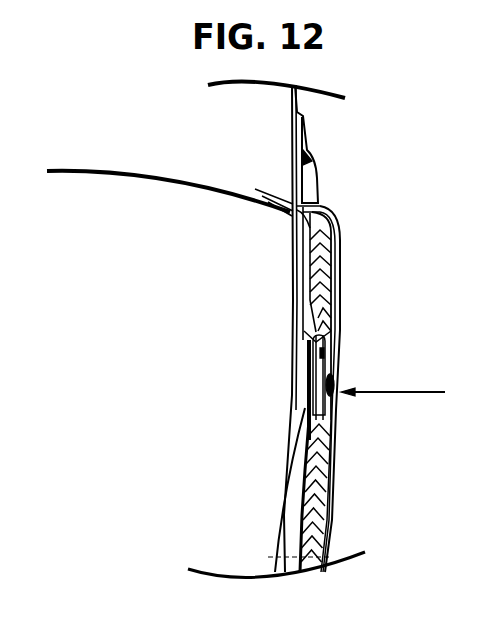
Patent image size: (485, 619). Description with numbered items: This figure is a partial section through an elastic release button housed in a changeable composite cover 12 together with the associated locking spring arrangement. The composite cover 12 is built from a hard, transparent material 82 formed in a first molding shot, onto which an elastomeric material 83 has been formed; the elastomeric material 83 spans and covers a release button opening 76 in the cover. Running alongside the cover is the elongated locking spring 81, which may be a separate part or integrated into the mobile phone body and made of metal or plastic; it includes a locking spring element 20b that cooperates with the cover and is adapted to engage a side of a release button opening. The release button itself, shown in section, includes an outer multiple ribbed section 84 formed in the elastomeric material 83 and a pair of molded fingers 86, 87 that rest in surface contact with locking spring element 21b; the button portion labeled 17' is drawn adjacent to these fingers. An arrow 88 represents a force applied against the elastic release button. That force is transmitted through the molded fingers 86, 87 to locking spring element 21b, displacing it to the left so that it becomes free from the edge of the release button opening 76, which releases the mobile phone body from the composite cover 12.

The composite cover 12 is at (358, 273).
The locking spring element 20b is at (320, 188).
The locking spring 81 is at (323, 167).
The elastomeric material 83 is at (326, 316).
The hard transparent material 82 is at (312, 316).
The release button opening 76 is at (322, 346).
The engaging portion 17' is at (359, 376).
The arrow 88 is at (412, 392).
The outer multiple ribbed section 84 is at (343, 422).
The locking spring element 21b is at (308, 362).
The molded finger 86 is at (307, 403).
The molded finger 87 is at (305, 410).